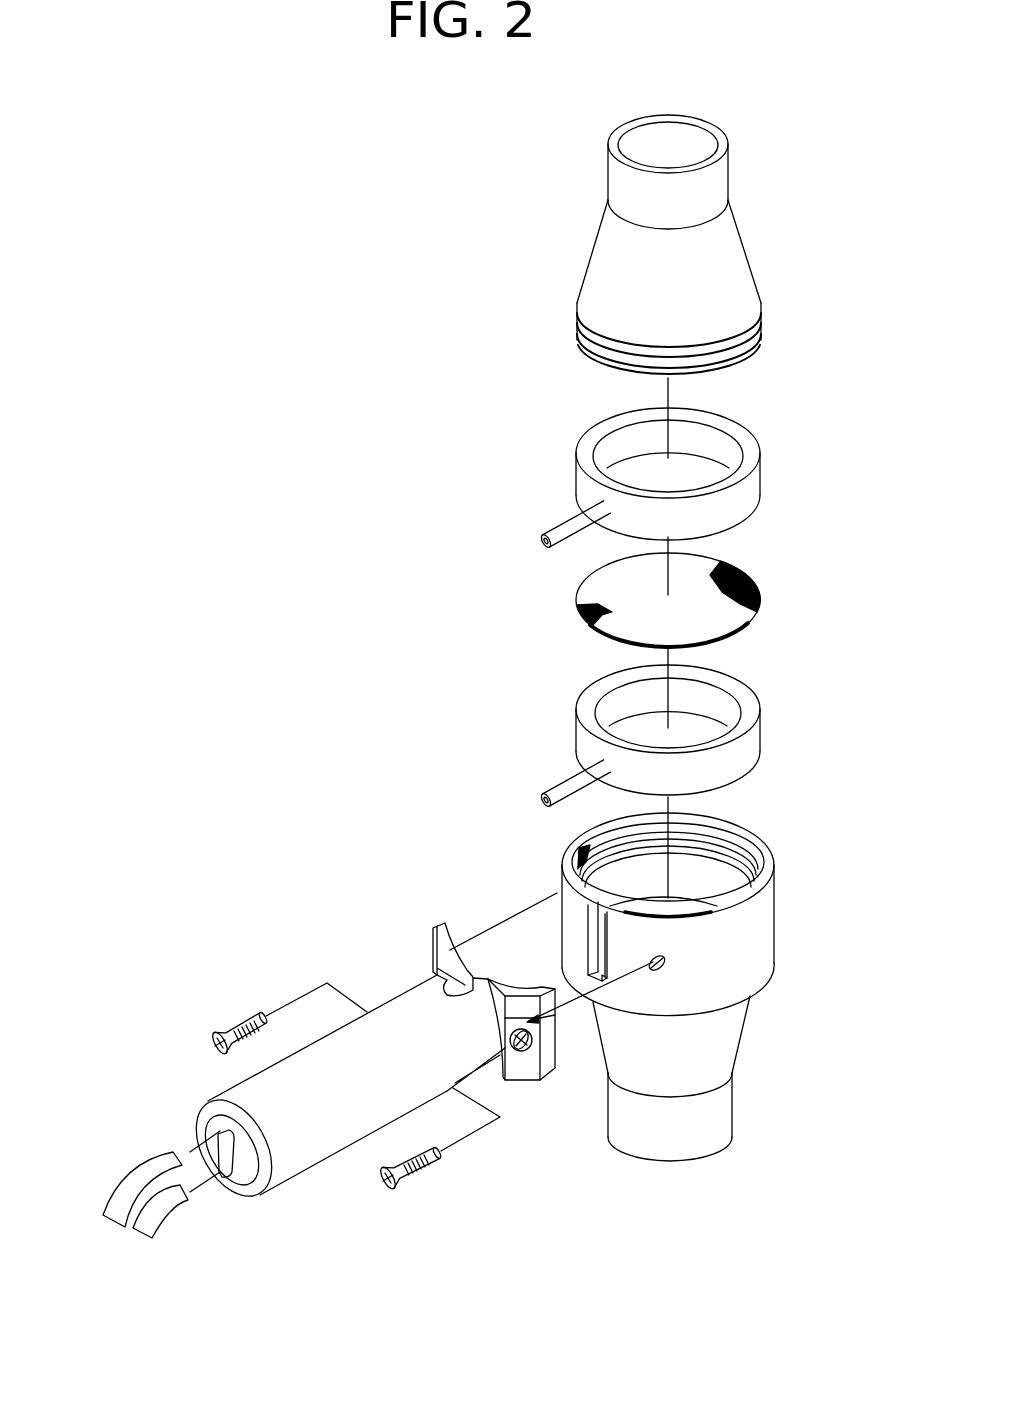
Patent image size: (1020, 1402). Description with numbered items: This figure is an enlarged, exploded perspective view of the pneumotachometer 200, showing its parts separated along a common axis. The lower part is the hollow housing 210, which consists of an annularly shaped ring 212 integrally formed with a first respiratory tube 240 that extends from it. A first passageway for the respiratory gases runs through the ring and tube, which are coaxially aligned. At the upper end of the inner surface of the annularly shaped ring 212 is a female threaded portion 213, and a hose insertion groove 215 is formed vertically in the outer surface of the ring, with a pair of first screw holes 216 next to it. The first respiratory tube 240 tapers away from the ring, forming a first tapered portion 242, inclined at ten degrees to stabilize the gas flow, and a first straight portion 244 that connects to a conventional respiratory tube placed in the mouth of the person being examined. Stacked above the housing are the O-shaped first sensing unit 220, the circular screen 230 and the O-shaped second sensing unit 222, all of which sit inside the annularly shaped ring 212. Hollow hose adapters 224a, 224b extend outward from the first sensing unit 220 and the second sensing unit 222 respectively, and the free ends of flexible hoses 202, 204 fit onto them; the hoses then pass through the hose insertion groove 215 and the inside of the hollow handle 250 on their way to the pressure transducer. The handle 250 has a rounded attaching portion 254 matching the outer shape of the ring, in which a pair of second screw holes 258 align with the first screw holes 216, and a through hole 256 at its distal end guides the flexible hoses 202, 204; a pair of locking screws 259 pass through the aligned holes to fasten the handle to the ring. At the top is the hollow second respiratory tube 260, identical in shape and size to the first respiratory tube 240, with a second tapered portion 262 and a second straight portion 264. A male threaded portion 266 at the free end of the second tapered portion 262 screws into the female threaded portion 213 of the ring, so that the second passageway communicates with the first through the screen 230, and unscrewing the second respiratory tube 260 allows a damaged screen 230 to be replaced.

The pneumotachometer 200 is at (273, 363).
The flexible hose 202 is at (140, 1173).
The flexible hose 204 is at (165, 1215).
The housing 210 is at (780, 936).
The annularly shaped ring 212 is at (769, 900).
The female threaded portion 213 is at (727, 848).
The hose insertion groove 215 is at (588, 948).
The first screw holes 216 is at (659, 970).
The first sensing unit 220 is at (752, 697).
The second sensing unit 222 is at (752, 478).
The hose adapter 224a is at (547, 800).
The hose adapter 224b is at (553, 532).
The screen 230 is at (577, 615).
The first respiratory tube 240 is at (746, 1021).
The first tapered portion 242 is at (727, 1044).
The first straight portion 244 is at (708, 1135).
The handle 250 is at (397, 987).
The attaching portion 254 is at (433, 925).
The through hole 256 is at (222, 1135).
The second screw holes 258 is at (520, 1053).
The locking screws 259 is at (238, 1023).
The second respiratory tube 260 is at (747, 214).
The second tapered portion 262 is at (602, 253).
The second straight portion 264 is at (612, 177).
The male threaded portion 266 is at (744, 354).